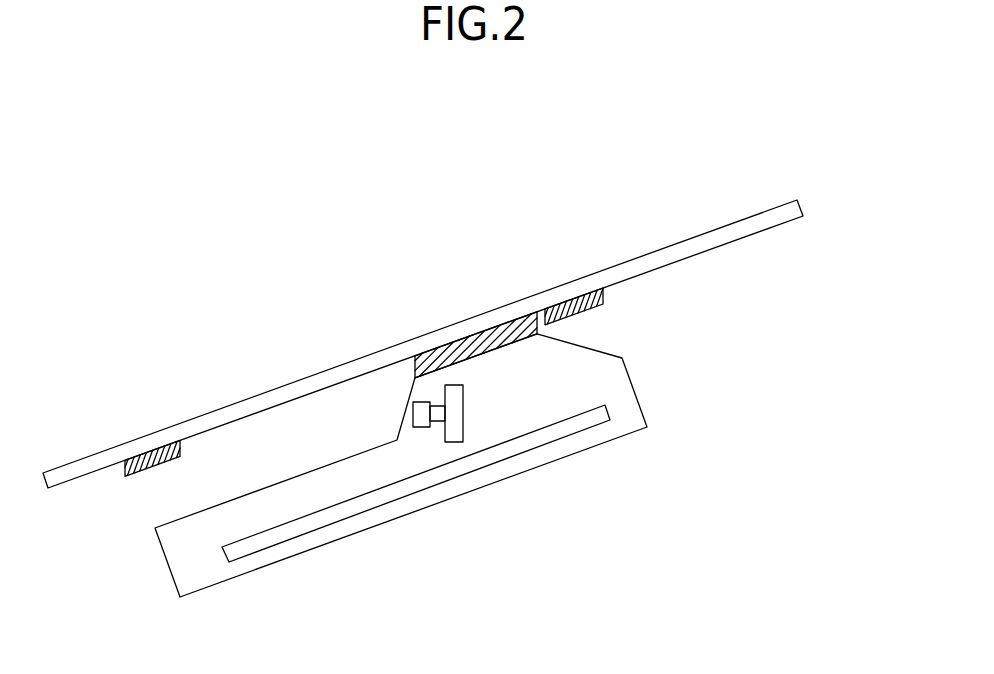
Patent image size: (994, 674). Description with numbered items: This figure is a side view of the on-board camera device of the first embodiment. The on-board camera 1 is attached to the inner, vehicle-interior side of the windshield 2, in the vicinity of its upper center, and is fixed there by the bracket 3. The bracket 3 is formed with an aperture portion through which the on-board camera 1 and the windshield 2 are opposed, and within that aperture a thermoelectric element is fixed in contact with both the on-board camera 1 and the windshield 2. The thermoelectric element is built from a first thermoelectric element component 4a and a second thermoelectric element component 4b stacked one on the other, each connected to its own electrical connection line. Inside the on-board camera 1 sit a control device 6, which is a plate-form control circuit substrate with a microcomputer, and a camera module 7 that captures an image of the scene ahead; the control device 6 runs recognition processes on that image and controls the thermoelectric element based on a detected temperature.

The on-board camera 1 is at (642, 405).
The windshield 2 is at (801, 210).
The bracket 3 is at (151, 454).
The first thermoelectric element component 4a is at (470, 337).
The second thermoelectric element component 4b is at (493, 358).
The control device 6 is at (337, 523).
The camera module 7 is at (460, 442).